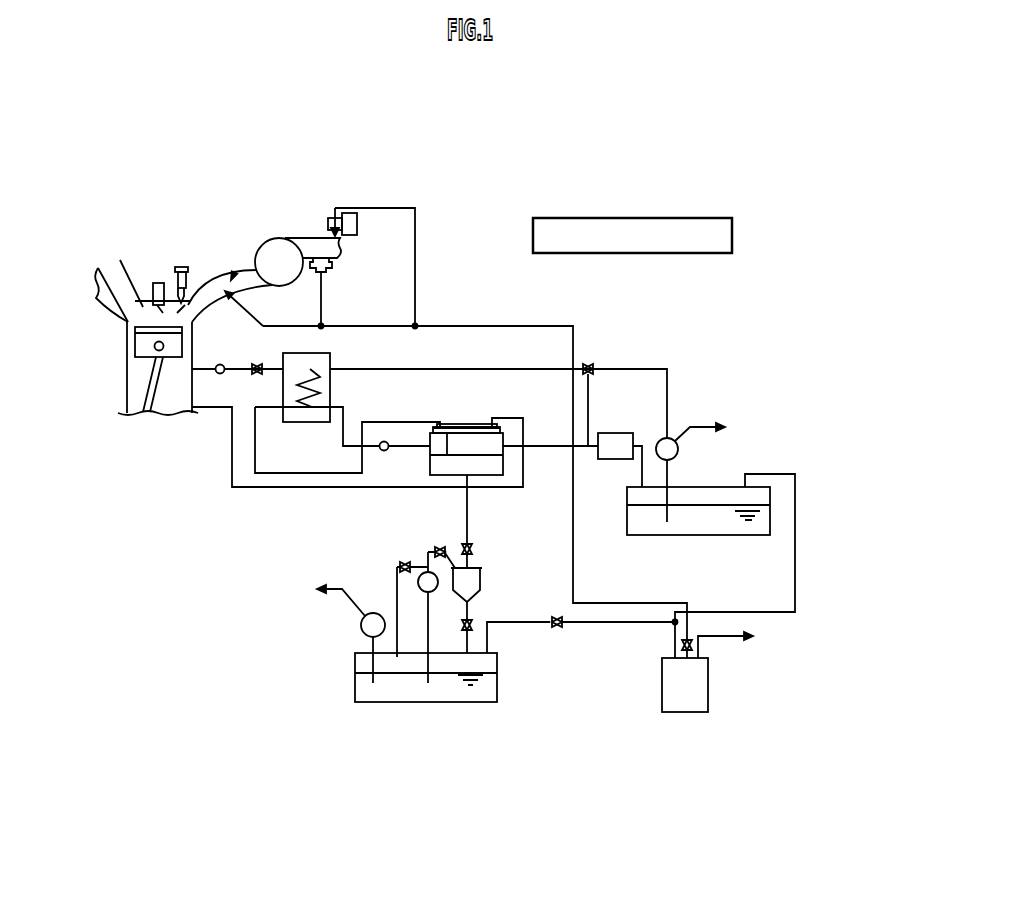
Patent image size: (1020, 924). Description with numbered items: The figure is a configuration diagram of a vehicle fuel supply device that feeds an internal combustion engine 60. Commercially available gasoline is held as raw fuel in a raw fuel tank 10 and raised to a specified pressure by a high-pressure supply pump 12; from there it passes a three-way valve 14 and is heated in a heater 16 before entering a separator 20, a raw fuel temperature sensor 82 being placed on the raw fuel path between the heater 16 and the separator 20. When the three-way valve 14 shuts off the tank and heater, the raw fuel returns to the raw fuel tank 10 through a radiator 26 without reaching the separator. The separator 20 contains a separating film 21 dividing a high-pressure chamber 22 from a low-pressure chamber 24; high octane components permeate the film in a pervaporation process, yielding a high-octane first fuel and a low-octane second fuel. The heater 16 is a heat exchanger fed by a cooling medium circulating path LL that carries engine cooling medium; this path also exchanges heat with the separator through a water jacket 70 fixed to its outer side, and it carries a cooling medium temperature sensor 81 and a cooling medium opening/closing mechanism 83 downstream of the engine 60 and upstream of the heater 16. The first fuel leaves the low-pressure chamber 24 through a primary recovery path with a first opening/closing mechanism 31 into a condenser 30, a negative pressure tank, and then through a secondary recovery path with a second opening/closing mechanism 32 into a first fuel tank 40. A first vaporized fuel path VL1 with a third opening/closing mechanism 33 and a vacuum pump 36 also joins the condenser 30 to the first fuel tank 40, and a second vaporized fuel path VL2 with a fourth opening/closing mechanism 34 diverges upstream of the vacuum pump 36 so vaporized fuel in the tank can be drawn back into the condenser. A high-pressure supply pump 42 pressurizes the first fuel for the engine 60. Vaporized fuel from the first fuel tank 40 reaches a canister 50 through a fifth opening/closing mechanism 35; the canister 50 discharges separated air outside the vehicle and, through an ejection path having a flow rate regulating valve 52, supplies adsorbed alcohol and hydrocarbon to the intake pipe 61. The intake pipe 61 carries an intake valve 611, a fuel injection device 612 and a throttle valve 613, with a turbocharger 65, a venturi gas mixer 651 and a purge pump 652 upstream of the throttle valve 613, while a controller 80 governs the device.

The internal combustion engine 60 is at (106, 260).
The intake pipe 61 is at (208, 308).
The intake valve 611 is at (196, 287).
The fuel injection device 612 is at (174, 277).
The throttle valve 613 is at (233, 275).
The turbocharger 65 is at (279, 240).
The venturi gas mixer 651 is at (334, 268).
The purge pump 652 is at (350, 236).
The controller 80 is at (711, 217).
The cooling medium temperature sensor 81 is at (222, 364).
The cooling medium opening/closing mechanism 83 is at (258, 364).
The raw fuel temperature sensor 82 is at (384, 440).
The three-way valve 14 is at (588, 364).
The heater 16 is at (306, 422).
The cooling medium circulating path LL is at (242, 488).
The separator 20 is at (452, 426).
The separating film 21 is at (447, 450).
The high-pressure chamber 22 is at (467, 440).
The low-pressure chamber 24 is at (435, 463).
The water jacket 70 is at (478, 428).
The radiator 26 is at (616, 433).
The high-pressure supply pump 12 is at (679, 449).
The raw fuel tank 10 is at (695, 487).
The first opening/closing mechanism 31 is at (462, 549).
The condenser 30 is at (481, 569).
The second opening/closing mechanism 32 is at (473, 622).
The third opening/closing mechanism 33 is at (434, 552).
The fourth opening/closing mechanism 34 is at (400, 564).
The vacuum pump 36 is at (418, 581).
The first vaporized fuel path VL1 is at (397, 607).
The second vaporized fuel path VL2 is at (427, 602).
The high-pressure supply pump 42 is at (360, 627).
The first fuel tank 40 is at (380, 702).
The fifth opening/closing mechanism 35 is at (557, 630).
The canister 50 is at (691, 712).
The flow rate regulating valve 52 is at (690, 641).